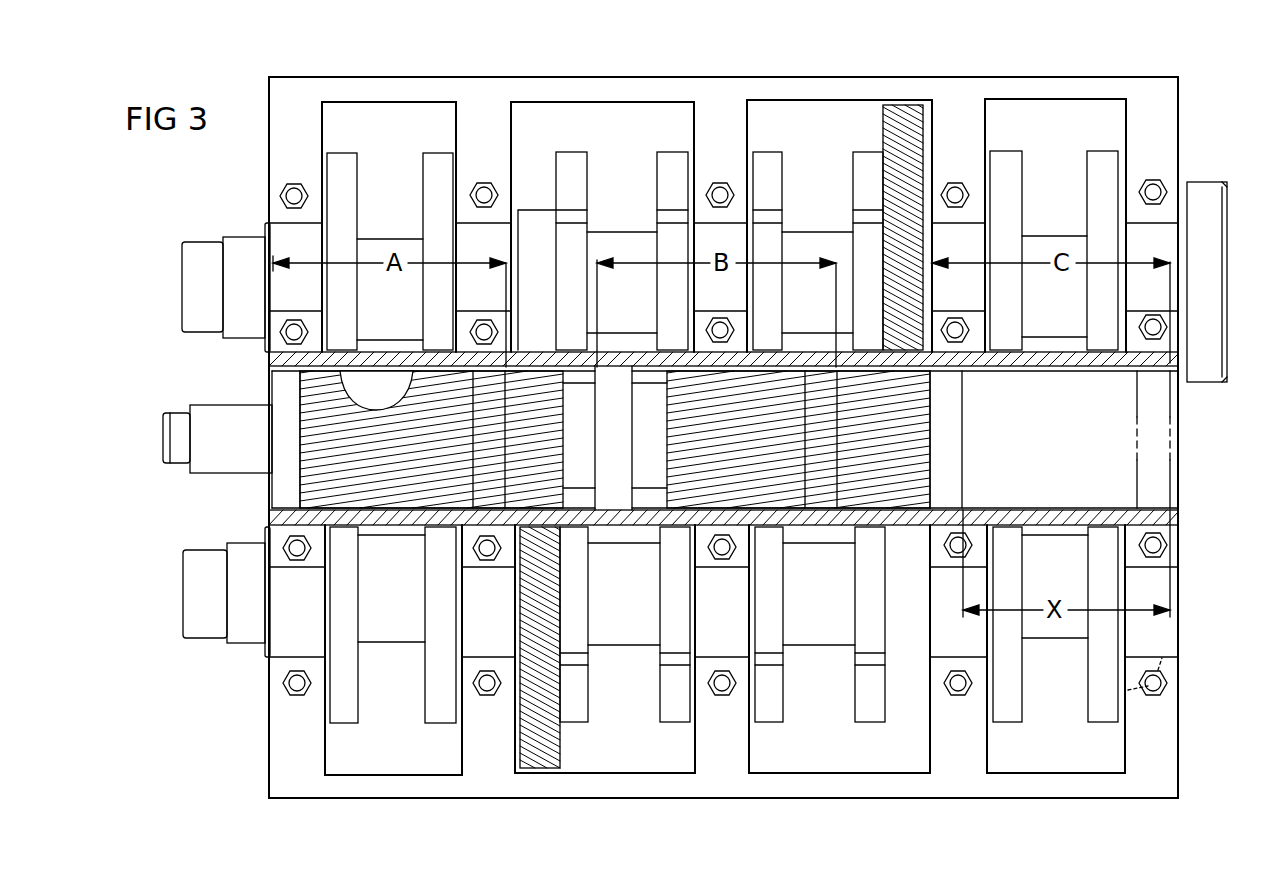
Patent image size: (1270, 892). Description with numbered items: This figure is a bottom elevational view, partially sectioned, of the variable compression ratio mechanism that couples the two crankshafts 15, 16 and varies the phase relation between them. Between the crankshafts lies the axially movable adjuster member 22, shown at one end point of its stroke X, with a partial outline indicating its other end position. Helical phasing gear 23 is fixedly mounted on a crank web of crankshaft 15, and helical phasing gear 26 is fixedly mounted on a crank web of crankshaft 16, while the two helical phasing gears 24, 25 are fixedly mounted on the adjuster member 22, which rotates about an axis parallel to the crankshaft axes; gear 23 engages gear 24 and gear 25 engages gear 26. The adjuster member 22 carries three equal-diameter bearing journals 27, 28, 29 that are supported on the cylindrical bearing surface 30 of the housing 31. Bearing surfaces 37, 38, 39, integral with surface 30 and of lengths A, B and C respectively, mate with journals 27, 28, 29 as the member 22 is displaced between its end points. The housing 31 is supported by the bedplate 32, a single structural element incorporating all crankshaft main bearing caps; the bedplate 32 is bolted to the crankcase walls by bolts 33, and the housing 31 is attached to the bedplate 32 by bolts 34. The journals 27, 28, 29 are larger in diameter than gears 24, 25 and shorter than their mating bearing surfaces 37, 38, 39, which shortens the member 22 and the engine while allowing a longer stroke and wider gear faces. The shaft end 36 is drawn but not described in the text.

The crankshaft 15 is at (387, 620).
The crankshaft 16 is at (400, 245).
The axially movable adjuster member 22 is at (588, 398).
The helical phasing gear 23 is at (540, 752).
The helical phasing gear 24 is at (315, 402).
The helical phasing gear 25 is at (947, 401).
The helical phasing gear 26 is at (893, 125).
The bearing journal 27 is at (282, 485).
The bearing journal 28 is at (617, 483).
The bearing journal 29 is at (948, 470).
The cylindrical bearing surface 30 is at (1100, 448).
The housing 31 is at (1062, 512).
The bedplate 32 is at (1157, 742).
The bolts 33 is at (290, 196).
The bolts 34 is at (292, 334).
The gear shaft end 36 is at (218, 460).
The bearing surface 37 is at (381, 395).
The bearing surface 38 is at (647, 378).
The bearing surface 39 is at (1108, 380).